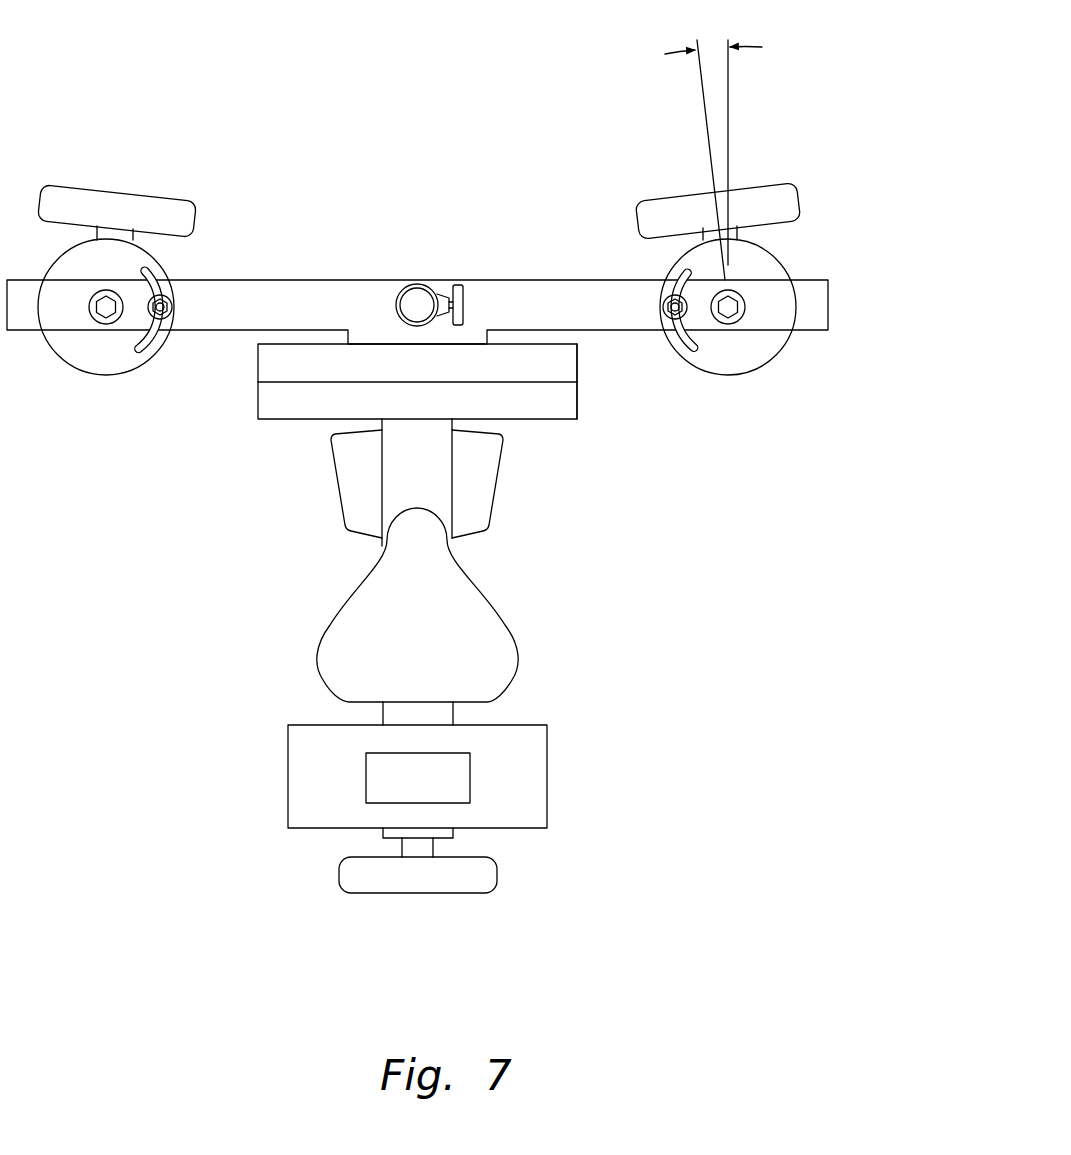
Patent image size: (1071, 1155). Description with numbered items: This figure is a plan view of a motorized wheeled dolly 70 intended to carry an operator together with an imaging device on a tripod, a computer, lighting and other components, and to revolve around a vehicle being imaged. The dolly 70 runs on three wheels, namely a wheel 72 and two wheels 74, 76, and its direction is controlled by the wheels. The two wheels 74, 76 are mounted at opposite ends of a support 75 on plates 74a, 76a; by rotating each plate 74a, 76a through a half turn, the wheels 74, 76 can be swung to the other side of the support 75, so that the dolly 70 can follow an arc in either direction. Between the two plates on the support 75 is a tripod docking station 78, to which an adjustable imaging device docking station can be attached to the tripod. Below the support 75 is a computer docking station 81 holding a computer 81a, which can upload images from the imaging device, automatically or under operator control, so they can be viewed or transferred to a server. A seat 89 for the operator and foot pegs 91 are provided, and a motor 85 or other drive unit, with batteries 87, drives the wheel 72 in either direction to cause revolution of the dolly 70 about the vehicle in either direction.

The dolly 70 is at (138, 102).
The wheel 72 is at (452, 893).
The wheel 74 is at (160, 196).
The plate 74a is at (108, 375).
The support 75 is at (527, 280).
The wheel 76 is at (672, 200).
The plate 76a is at (728, 375).
The tripod docking station 78 is at (396, 305).
The computer docking station 81 is at (256, 404).
The computer 81a is at (577, 402).
The motor 85 is at (288, 774).
The batteries 87 is at (470, 777).
The seat 89 is at (318, 658).
The foot pegs 91 is at (498, 487).